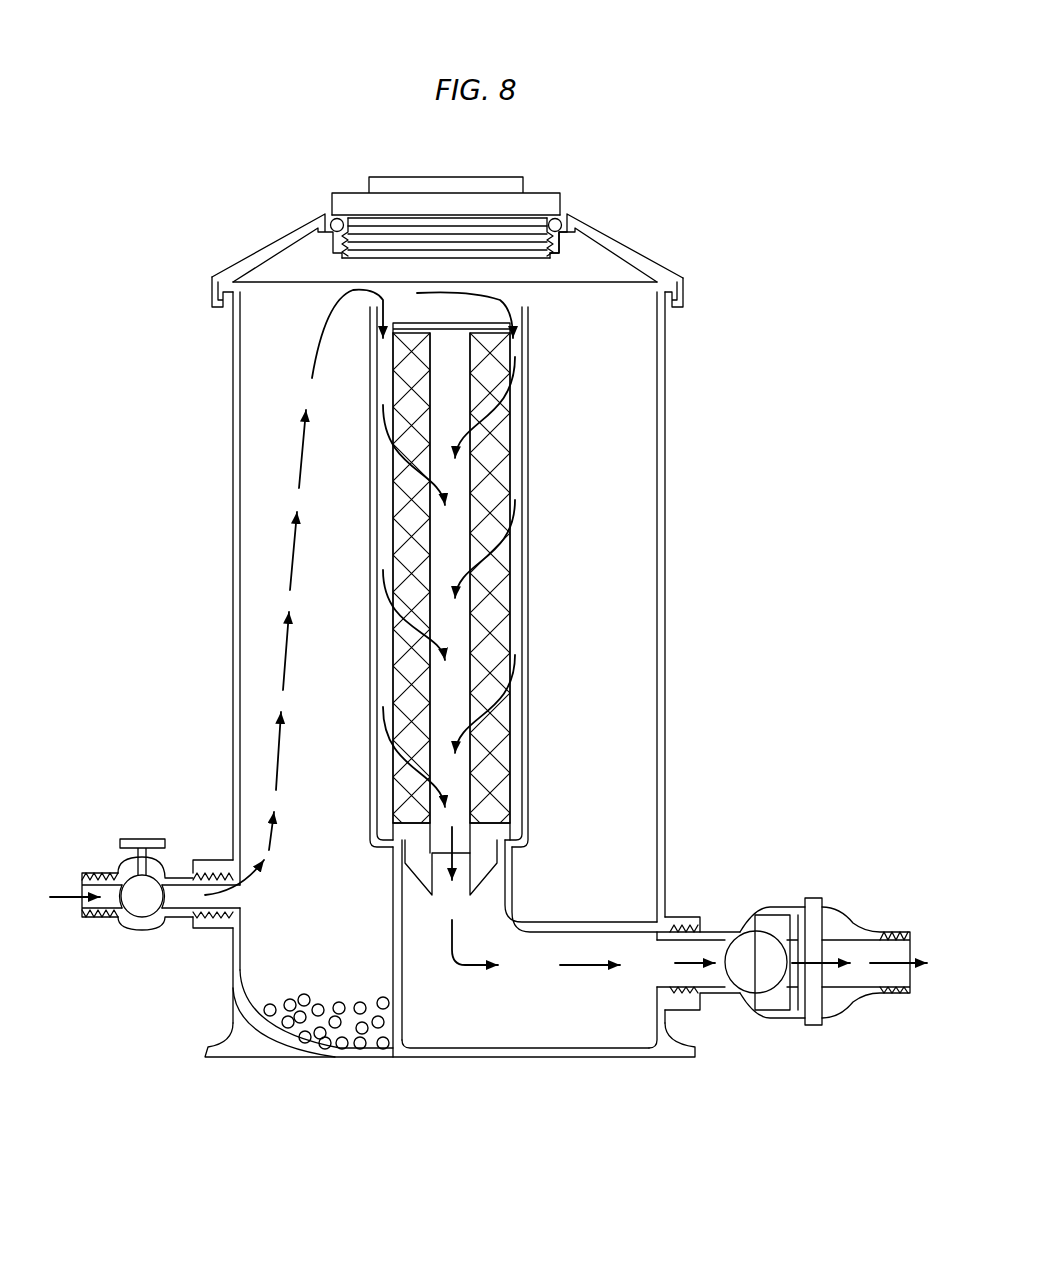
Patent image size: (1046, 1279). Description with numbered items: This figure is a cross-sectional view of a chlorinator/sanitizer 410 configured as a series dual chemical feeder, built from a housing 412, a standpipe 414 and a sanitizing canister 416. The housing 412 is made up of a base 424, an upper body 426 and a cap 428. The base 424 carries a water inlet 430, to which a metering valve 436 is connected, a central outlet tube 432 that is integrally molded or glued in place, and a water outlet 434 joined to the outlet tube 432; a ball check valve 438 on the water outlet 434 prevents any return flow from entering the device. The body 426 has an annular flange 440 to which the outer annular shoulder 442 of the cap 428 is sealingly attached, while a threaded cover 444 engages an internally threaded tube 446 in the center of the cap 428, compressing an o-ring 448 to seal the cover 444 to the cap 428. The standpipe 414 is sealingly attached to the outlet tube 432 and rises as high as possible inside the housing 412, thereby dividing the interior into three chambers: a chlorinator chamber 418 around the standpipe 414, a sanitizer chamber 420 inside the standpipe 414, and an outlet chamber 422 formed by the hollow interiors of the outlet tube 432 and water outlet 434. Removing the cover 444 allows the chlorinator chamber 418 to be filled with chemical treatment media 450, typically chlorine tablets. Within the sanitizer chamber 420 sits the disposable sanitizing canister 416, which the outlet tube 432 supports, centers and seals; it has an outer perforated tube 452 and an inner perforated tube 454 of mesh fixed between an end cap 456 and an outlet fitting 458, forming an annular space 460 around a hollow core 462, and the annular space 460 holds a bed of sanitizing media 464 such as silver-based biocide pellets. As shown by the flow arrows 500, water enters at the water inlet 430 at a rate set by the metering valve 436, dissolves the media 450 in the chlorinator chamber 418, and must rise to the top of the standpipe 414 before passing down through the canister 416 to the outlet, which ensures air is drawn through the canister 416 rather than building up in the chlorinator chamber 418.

The chlorinator/sanitizer 410 is at (186, 487).
The housing 412 is at (230, 421).
The standpipe 414 is at (530, 395).
The sanitizing canister 416 is at (507, 457).
The chlorinator chamber 418 is at (250, 750).
The sanitizer chamber 420 is at (517, 487).
The outlet chamber 422 is at (528, 1048).
The base 424 is at (232, 990).
The body 426 is at (236, 770).
The cap 428 is at (300, 228).
The water inlet 430 is at (197, 928).
The outlet tube 432 is at (512, 880).
The water outlet 434 is at (672, 915).
The metering valve 436 is at (116, 860).
The ball check valve 438 is at (772, 1022).
The annular flange 440 is at (224, 303).
The outer annular shoulder 442 is at (214, 282).
The threaded cover 444 is at (530, 200).
The internally threaded tube 446 is at (568, 240).
The o-ring 448 is at (562, 222).
The chemical treatment media 450 is at (318, 1030).
The outer perforated tube 452 is at (515, 580).
The inner perforated tube 454 is at (512, 650).
The end cap 456 is at (505, 327).
The outlet fitting 458 is at (502, 828).
The annular space 460 is at (500, 722).
The hollow core 462 is at (508, 428).
The sanitizing media 464 is at (497, 766).
The flow arrows 500 is at (262, 885).